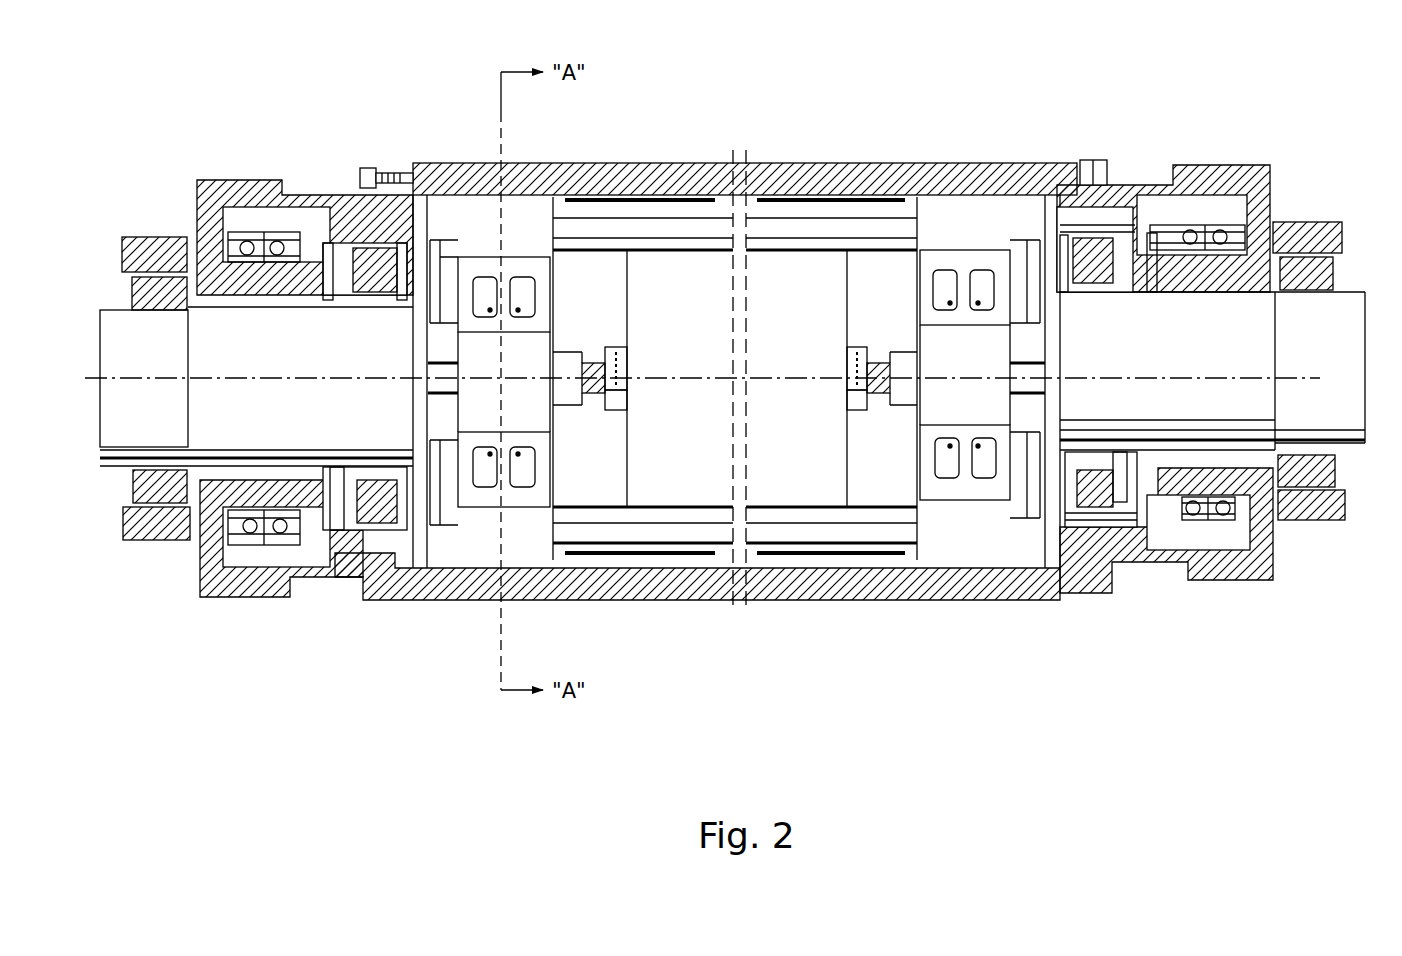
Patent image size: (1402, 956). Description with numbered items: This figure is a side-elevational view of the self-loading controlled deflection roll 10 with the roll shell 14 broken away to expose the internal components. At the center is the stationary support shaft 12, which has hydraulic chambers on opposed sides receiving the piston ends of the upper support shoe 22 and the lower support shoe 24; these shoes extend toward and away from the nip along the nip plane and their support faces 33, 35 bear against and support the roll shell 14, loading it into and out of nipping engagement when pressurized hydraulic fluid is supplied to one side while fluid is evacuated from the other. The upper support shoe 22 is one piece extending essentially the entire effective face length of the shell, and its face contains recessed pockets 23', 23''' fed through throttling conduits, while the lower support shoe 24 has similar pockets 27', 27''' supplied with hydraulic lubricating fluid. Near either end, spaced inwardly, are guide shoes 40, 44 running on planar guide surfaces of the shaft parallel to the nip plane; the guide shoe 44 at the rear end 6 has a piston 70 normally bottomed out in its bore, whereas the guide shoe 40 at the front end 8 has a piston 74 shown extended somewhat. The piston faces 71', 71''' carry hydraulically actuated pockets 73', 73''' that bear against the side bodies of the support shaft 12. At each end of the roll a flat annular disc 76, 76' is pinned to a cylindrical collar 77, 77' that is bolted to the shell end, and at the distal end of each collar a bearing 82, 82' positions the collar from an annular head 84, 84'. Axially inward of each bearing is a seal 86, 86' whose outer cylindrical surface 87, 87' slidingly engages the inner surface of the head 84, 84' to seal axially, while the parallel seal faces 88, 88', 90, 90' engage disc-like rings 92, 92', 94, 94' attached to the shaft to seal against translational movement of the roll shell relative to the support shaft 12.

The rear end 6 is at (1306, 166).
The front end 8 is at (152, 182).
The self-loading controlled deflection roll 10 is at (886, 706).
The support shaft 12 is at (105, 310).
The roll shell 14 is at (880, 163).
The upper support shoe 22 is at (930, 197).
The recessed pocket 23' is at (640, 154).
The recessed pocket 23''' is at (831, 154).
The lower support shoe 24 is at (925, 550).
The pocket 27' is at (640, 606).
The pocket 27''' is at (831, 599).
The support face 33 is at (556, 200).
The support face 35 is at (553, 568).
The guide shoe 40 is at (462, 257).
The guide shoe 44 is at (1005, 250).
The piston 70 is at (880, 363).
The piston face 71' is at (639, 339).
The piston face 71''' is at (820, 341).
The pocket 73' is at (649, 407).
The pocket 73''' is at (823, 412).
The piston 74 is at (595, 363).
The annular disc 76 is at (432, 426).
The annular disc 76' is at (1074, 422).
The cylindrical collar 77 is at (305, 213).
The cylindrical collar 77' is at (1163, 206).
The bearing 82 is at (264, 572).
The bearing 82' is at (1201, 561).
The annular head 84 is at (273, 556).
The annular head 84' is at (1177, 551).
The seal 86 is at (374, 293).
The seal 86' is at (1098, 282).
The outer cylindrical surface 87 is at (366, 199).
The outer cylindrical surface 87' is at (1115, 182).
The seal face 88 is at (312, 294).
The seal face 88' is at (1172, 290).
The seal face 90 is at (386, 309).
The seal face 90' is at (1085, 300).
The disc-like ring 92 is at (348, 461).
The disc-like ring 92' is at (1150, 442).
The disc-like ring 94 is at (380, 464).
The disc-like ring 94' is at (1096, 446).